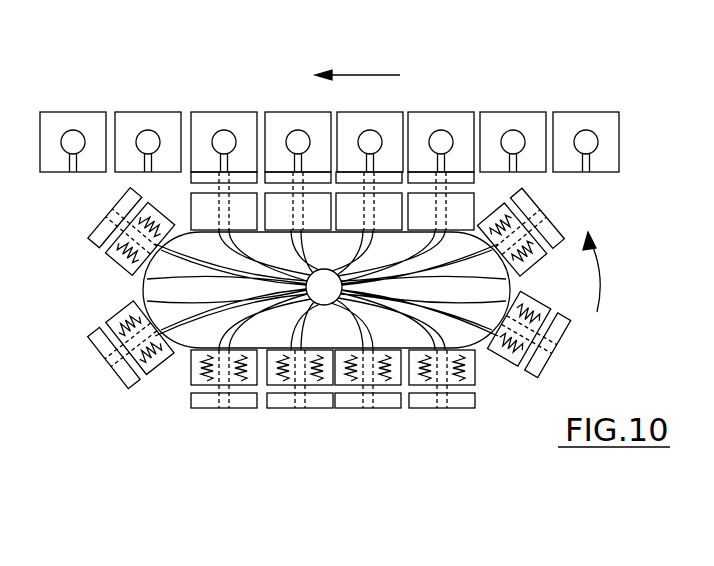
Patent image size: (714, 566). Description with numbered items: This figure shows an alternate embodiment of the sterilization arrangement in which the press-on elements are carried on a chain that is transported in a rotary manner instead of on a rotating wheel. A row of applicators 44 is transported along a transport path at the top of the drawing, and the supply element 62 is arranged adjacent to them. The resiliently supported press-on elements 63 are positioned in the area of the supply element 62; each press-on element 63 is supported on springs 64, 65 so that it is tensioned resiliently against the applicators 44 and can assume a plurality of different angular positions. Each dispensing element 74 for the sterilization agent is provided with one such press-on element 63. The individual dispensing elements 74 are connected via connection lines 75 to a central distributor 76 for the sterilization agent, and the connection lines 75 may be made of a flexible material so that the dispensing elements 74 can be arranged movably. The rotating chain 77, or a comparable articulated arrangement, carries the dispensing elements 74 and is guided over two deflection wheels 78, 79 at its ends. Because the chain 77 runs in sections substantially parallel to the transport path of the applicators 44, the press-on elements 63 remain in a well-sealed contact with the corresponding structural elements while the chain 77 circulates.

The applicator 44 is at (55, 123).
The supply element 62 is at (151, 439).
The press-on element 63 is at (207, 407).
The spring 64 is at (173, 439).
The spring 65 is at (245, 385).
The dispensing element 74 is at (514, 352).
The connection line 75 is at (143, 291).
The central distributor 76 is at (324, 290).
The chain 77 is at (152, 289).
The deflection wheel 78 is at (188, 327).
The deflection wheel 79 is at (462, 320).